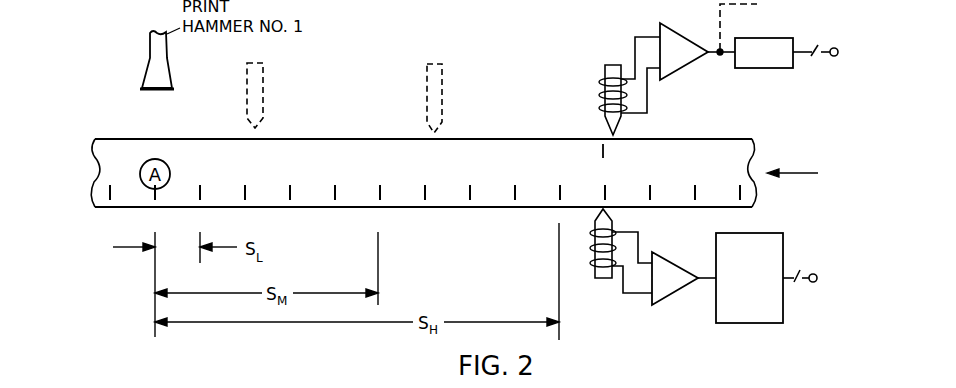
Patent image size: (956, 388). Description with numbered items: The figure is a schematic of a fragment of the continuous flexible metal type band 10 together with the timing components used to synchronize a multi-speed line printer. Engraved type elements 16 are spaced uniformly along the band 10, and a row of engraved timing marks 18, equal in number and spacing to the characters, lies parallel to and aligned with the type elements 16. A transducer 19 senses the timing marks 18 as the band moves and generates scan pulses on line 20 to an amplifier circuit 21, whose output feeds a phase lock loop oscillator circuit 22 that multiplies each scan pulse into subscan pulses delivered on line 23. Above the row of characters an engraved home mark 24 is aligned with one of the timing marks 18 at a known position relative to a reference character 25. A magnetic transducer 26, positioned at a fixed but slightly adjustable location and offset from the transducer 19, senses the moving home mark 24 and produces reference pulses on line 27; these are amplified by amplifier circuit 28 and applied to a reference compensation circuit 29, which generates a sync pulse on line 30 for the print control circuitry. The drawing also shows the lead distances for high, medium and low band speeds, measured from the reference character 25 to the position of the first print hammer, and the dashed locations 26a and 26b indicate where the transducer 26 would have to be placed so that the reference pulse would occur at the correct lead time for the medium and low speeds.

The type band 10 is at (345, 139).
The type elements 16 is at (386, 175).
The timing marks 18 is at (467, 193).
The transducer 19 is at (604, 280).
The line 20 is at (639, 237).
The amplifier circuit 21 is at (667, 266).
The phase lock loop oscillator circuit 22 is at (752, 324).
The line 23 is at (797, 283).
The home mark 24 is at (600, 151).
The reference character 25 is at (557, 171).
The magnetic transducer 26 is at (605, 72).
The transducer location 26a is at (442, 88).
The transducer location 26b is at (263, 85).
The line 27 is at (641, 40).
The amplifier circuit 28 is at (685, 36).
The reference compensation circuit 29 is at (771, 38).
The line 30 is at (814, 56).